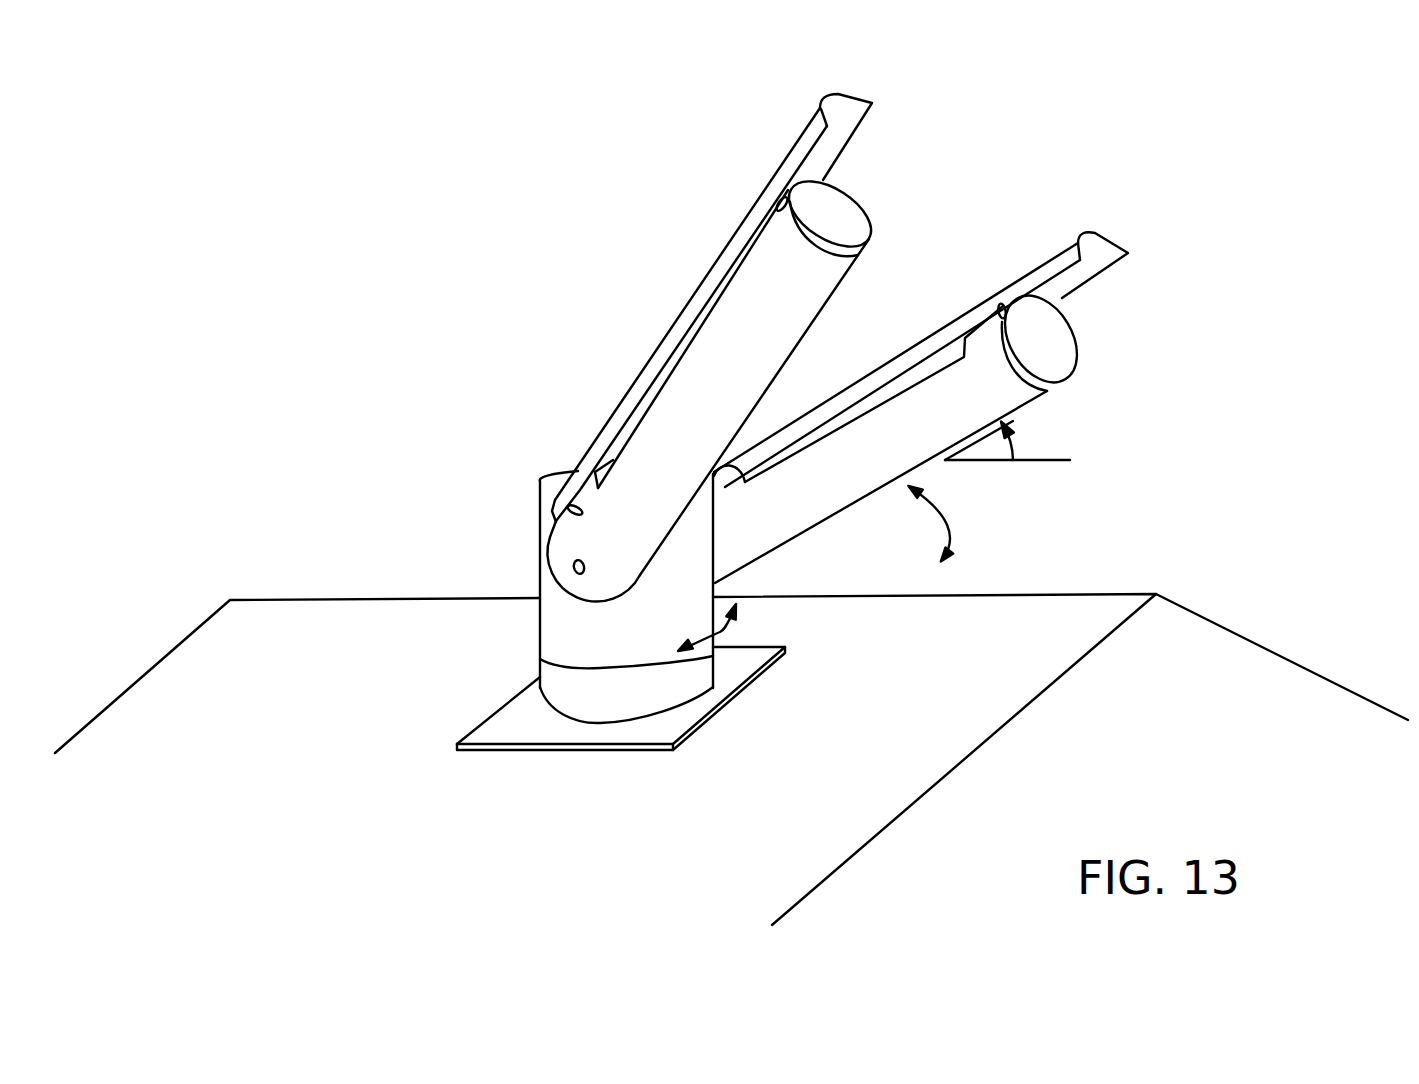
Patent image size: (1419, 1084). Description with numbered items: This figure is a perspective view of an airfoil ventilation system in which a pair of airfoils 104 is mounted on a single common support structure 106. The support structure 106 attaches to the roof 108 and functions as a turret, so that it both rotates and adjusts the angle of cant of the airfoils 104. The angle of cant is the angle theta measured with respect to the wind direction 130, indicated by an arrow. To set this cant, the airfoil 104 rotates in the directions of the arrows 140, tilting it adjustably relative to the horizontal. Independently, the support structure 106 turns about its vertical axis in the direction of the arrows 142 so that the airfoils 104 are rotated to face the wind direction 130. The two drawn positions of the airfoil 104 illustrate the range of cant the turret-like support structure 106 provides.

The airfoil 104 is at (783, 172).
The support structure 106 is at (539, 548).
The roof 108 is at (365, 598).
The wind direction 130 is at (422, 368).
The arrows 140 is at (969, 494).
The arrows 142 is at (720, 632).